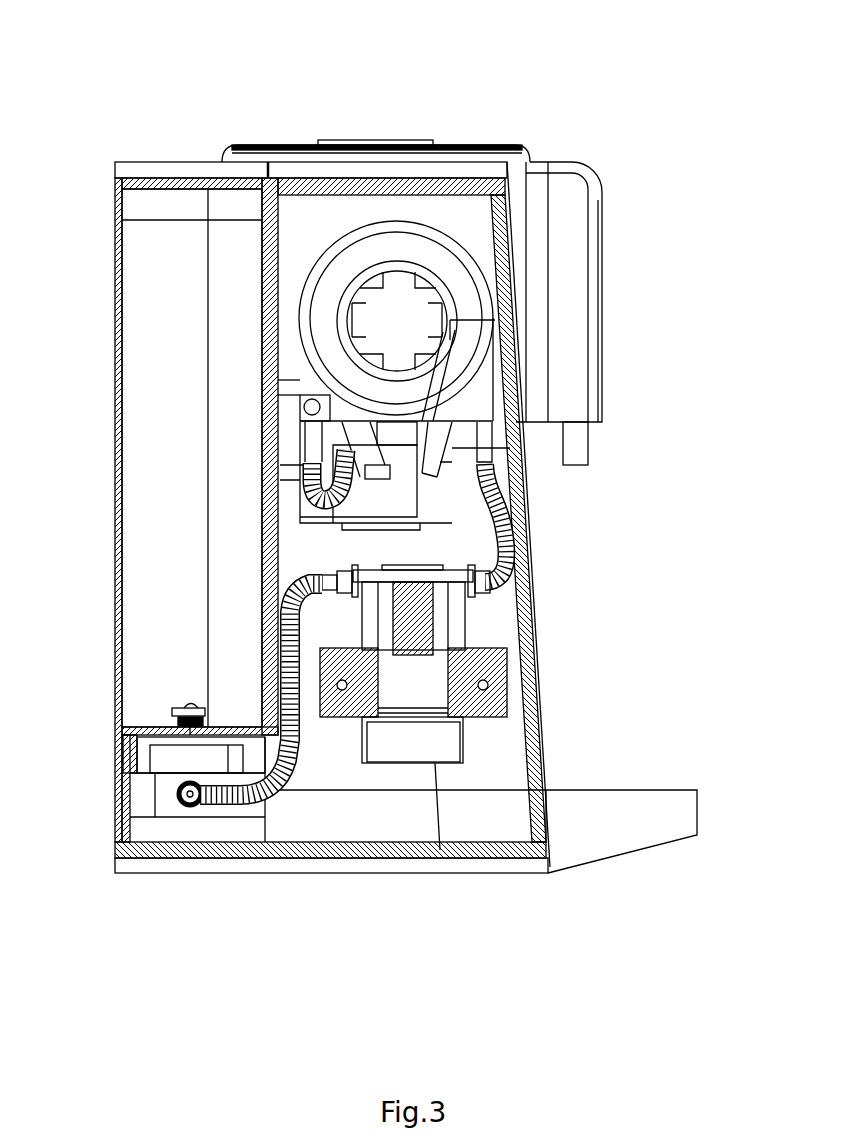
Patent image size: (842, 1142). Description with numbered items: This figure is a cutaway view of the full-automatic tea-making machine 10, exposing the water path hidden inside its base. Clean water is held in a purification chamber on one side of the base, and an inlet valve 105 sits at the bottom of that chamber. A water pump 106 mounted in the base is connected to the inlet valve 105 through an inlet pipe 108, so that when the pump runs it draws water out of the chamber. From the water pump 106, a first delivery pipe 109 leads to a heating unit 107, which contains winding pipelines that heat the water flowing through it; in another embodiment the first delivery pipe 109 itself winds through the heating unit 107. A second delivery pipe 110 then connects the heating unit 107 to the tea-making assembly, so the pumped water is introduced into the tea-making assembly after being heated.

The full-automatic tea-making machine 10 is at (697, 122).
The inlet valve 105 is at (190, 720).
The water pump 106 is at (445, 613).
The heating unit 107 is at (408, 250).
The inlet pipe 108 is at (248, 780).
The first delivery pipe 109 is at (517, 552).
The second delivery pipe 110 is at (310, 492).